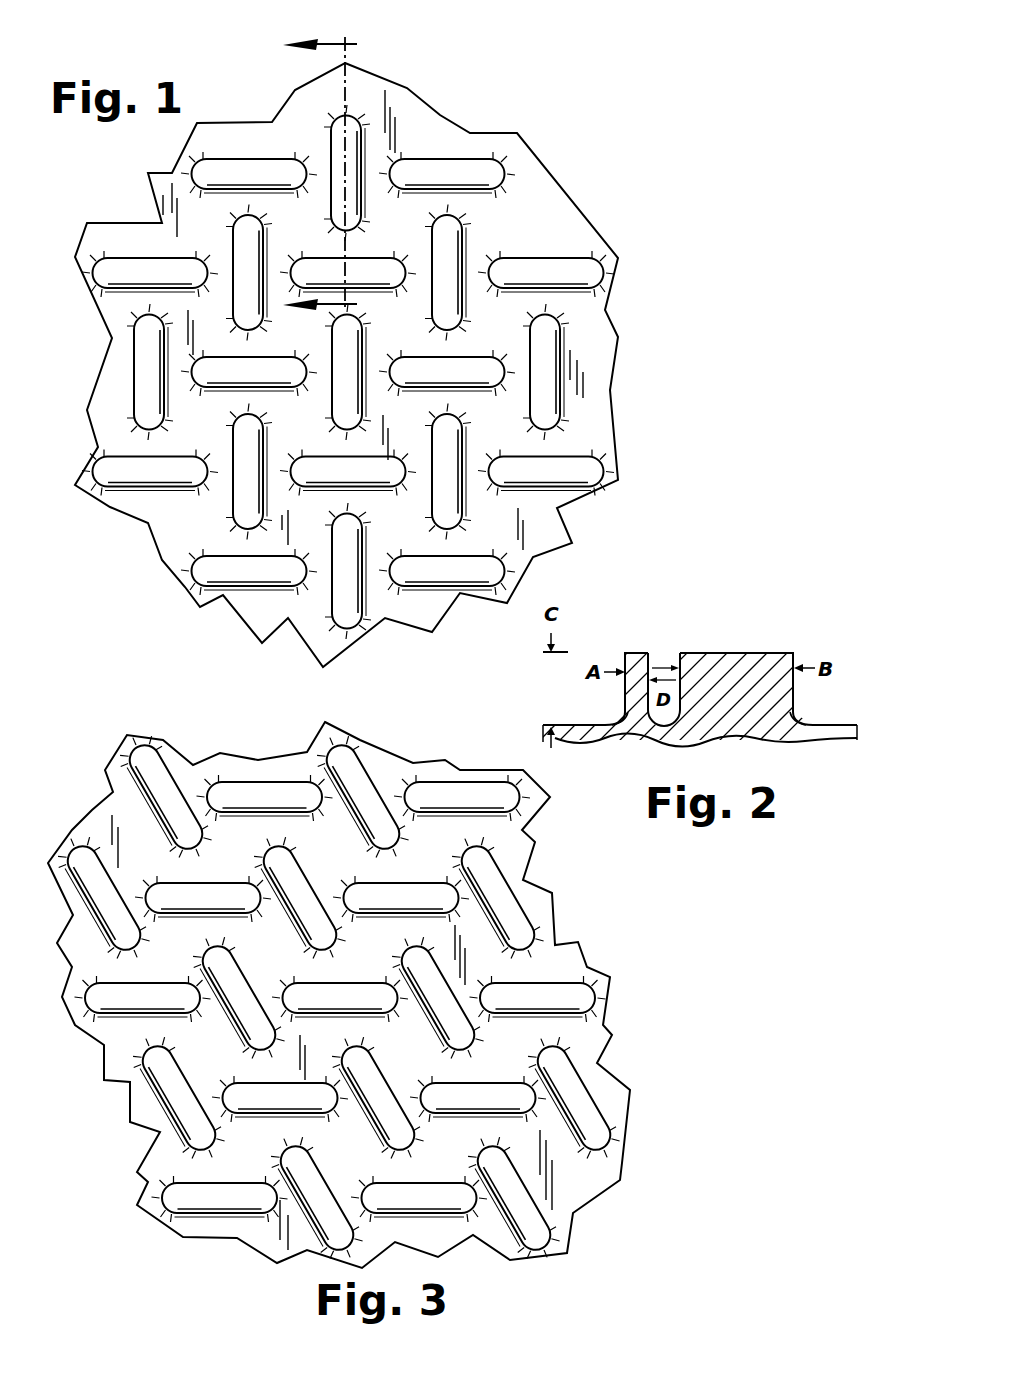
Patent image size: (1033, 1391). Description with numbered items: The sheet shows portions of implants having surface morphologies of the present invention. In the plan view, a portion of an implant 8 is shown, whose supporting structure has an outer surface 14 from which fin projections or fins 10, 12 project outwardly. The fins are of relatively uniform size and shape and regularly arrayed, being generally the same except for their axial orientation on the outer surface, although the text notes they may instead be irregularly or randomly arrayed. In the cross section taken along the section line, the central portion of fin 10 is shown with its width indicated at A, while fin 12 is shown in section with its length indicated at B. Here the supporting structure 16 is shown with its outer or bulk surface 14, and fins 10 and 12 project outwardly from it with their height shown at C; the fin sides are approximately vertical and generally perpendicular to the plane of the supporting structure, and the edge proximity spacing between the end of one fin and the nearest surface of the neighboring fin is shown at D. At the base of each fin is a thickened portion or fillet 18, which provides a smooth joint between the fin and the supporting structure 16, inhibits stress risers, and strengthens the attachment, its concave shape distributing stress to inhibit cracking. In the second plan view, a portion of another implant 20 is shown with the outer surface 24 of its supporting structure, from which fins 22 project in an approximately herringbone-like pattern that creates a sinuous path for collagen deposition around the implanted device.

In FIG. 1, the implant 8 is at (660, 268).
In FIG. 1, the fin 10 is at (469, 163).
In FIG. 2, the fin 10 is at (637, 653).
In FIG. 1, the fin 12 is at (338, 157).
In FIG. 2, the fin 12 is at (752, 652).
In FIG. 1, the outer surface 14 is at (538, 217).
In FIG. 2, the outer surface 14 is at (836, 727).
In FIG. 2, the supporting structure 16 is at (833, 739).
In FIG. 2, the fillet 18 is at (620, 724).
In FIG. 3, the implant 20 is at (655, 1073).
In FIG. 3, the fins 22 is at (442, 790).
In FIG. 3, the outer surface 24 is at (581, 1184).